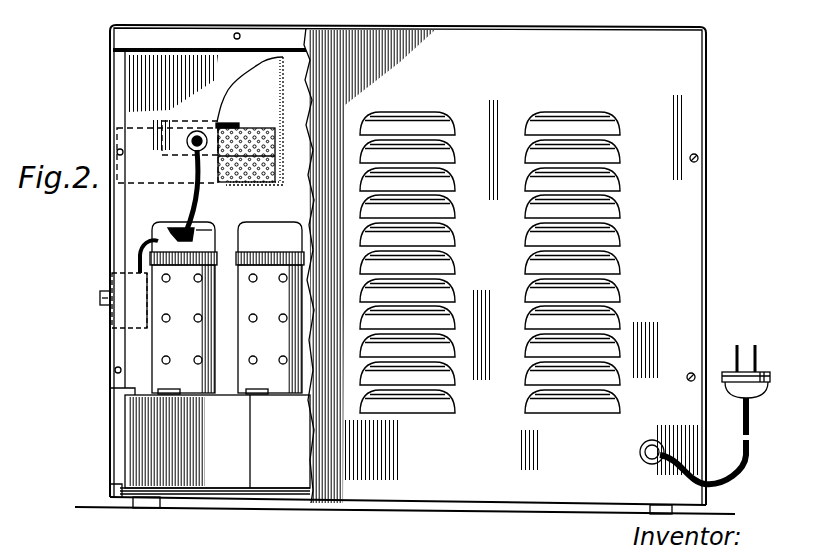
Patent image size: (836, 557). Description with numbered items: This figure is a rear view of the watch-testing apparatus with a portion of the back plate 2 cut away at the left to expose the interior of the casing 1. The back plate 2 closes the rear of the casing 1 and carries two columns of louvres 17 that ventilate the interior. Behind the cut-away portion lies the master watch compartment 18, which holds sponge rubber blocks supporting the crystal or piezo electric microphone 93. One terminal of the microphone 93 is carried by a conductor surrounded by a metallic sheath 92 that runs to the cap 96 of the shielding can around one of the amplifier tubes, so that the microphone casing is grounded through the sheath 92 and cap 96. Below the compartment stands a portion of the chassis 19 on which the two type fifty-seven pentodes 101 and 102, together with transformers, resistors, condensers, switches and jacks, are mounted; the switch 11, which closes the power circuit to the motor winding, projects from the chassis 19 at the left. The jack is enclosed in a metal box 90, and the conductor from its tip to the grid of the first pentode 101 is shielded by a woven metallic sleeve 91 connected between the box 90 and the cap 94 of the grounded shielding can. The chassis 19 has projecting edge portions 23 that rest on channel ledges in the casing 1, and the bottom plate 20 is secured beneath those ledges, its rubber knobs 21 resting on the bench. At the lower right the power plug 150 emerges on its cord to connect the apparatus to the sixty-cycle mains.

The casing 1 is at (708, 161).
The back plate 2 is at (683, 248).
The switch 11 is at (100, 298).
The louvres 17 is at (453, 131).
The master watch compartment 18 is at (140, 75).
The chassis 19 is at (128, 413).
The bottom plate 20 is at (216, 490).
The foot 21 is at (143, 512).
The projecting edge portion 23 is at (119, 481).
The metal box 90 is at (138, 330).
The woven metallic sleeve 91 is at (140, 251).
The metallic sheath 92 is at (188, 205).
The piezo electric microphone 93 is at (226, 124).
The cap of shielding can 94 is at (212, 230).
The cap of shielding can 96 is at (198, 226).
The pentode 101 is at (183, 308).
The pentode 102 is at (270, 308).
The plug 150 is at (758, 400).